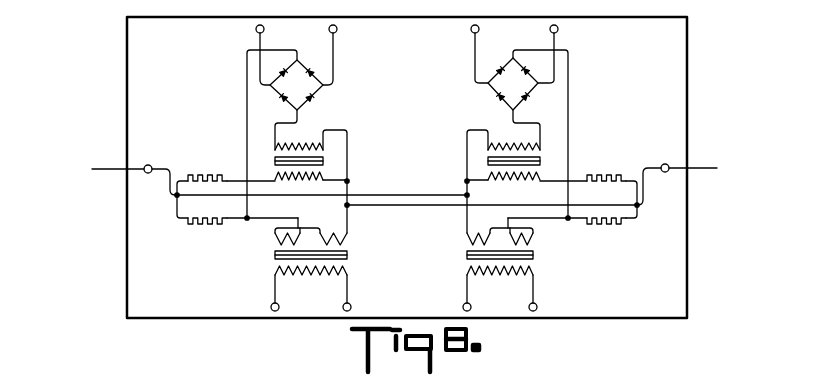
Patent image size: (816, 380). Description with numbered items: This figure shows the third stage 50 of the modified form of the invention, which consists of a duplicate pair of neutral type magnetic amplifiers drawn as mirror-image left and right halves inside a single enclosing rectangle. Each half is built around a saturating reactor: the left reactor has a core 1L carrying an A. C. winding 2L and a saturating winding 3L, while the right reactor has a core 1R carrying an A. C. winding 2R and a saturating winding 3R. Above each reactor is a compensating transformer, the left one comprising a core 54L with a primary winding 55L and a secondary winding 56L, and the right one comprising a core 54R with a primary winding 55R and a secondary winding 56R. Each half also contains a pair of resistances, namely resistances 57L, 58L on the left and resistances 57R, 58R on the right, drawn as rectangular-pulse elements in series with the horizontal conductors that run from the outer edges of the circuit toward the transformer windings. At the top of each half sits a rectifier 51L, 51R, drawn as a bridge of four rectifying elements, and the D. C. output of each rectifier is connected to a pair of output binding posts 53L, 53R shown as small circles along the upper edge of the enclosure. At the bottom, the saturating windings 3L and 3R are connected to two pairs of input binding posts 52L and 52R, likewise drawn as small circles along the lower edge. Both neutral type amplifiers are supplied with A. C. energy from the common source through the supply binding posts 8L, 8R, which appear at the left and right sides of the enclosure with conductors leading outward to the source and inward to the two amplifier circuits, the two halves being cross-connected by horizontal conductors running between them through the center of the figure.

The third stage 50 is at (745, 31).
The supply binding post 8L is at (300, 182).
The supply binding post 8R is at (510, 185).
The output binding posts 53L is at (320, 29).
The output binding posts 53R is at (550, 29).
The rectifier 51L is at (300, 134).
The rectifier 51R is at (511, 134).
The secondary winding 56L is at (311, 179).
The secondary winding 56R is at (503, 179).
The core 54L is at (323, 160).
The core 54R is at (488, 160).
The primary winding 55L is at (312, 186).
The primary winding 55R is at (502, 186).
The resistance 57L is at (226, 175).
The resistance 57R is at (588, 180).
The resistance 58L is at (237, 219).
The resistance 58R is at (572, 224).
The A. C. winding 2L is at (311, 228).
The A. C. winding 2R is at (500, 228).
The core 1L is at (297, 257).
The core 1R is at (514, 257).
The saturating winding 3L is at (311, 284).
The saturating winding 3R is at (500, 284).
The input binding posts 52L is at (335, 307).
The input binding posts 52R is at (521, 307).